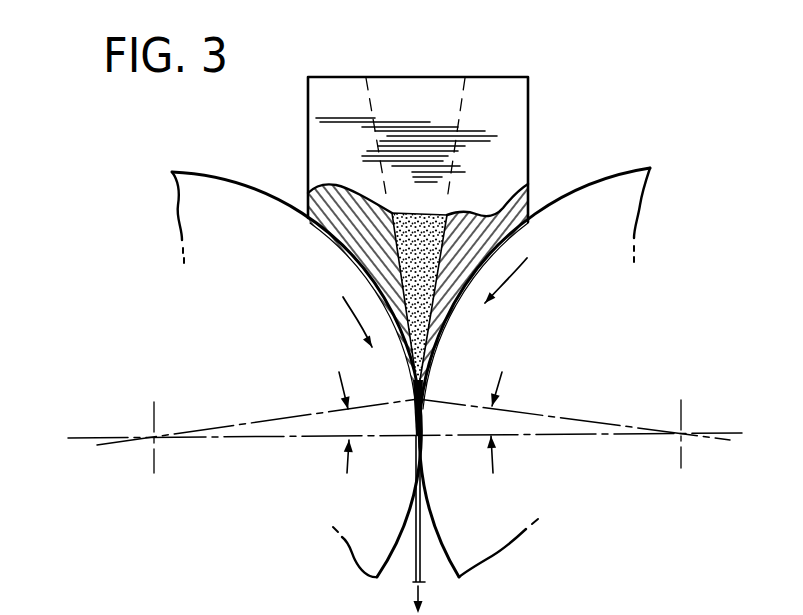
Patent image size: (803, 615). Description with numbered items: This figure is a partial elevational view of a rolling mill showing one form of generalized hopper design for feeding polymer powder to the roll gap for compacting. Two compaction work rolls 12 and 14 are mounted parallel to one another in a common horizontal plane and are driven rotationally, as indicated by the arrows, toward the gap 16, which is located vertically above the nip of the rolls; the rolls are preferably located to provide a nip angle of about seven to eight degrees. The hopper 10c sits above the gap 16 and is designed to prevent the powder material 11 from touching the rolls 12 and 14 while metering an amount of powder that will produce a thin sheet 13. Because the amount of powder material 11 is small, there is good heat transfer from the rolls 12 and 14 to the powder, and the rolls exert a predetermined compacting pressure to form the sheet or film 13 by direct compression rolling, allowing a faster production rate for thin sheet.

The hopper 10c is at (419, 66).
The powder material 11 is at (431, 260).
The compaction work roll 12 is at (556, 196).
The sheet or film 13 is at (440, 540).
The compaction work roll 14 is at (272, 200).
The gap 16 is at (422, 401).